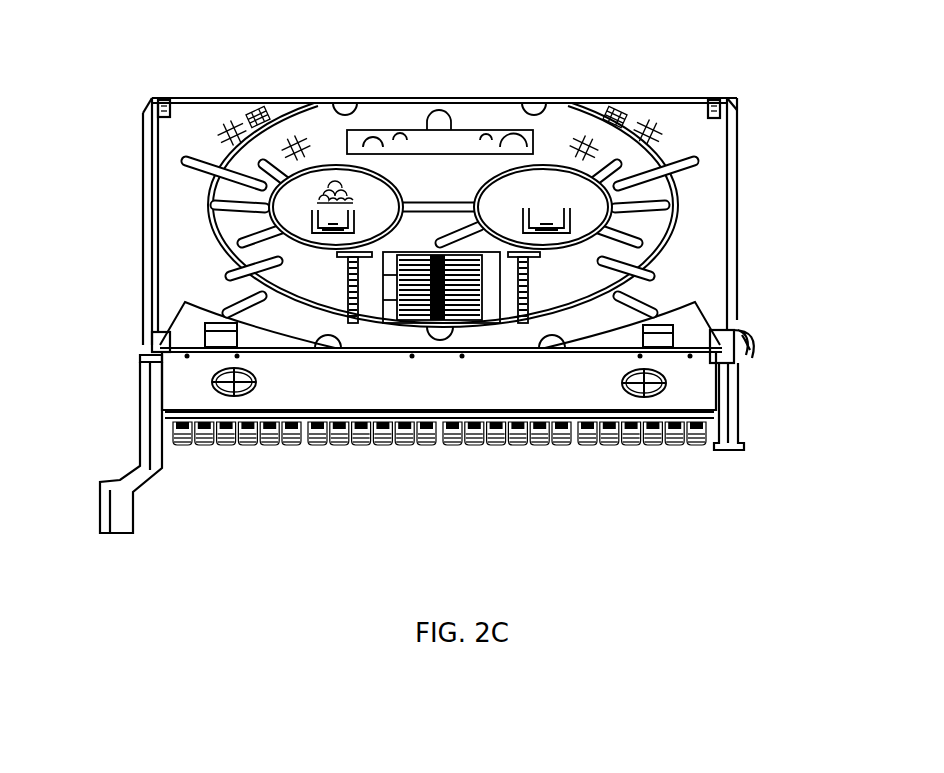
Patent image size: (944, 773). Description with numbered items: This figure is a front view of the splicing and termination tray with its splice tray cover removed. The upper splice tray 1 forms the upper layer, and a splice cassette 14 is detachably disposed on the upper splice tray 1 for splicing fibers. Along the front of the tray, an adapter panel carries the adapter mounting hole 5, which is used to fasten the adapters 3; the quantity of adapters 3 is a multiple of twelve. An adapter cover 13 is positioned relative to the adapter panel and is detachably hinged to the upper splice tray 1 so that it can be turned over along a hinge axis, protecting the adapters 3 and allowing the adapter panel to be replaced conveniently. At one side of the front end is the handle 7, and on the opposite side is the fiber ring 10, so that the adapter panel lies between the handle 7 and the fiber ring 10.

The upper splice tray 1 is at (685, 148).
The splice cassette 14 is at (478, 215).
The adapter cover 13 is at (522, 378).
The adapters 3 is at (373, 443).
The adapter mounting hole 5 is at (478, 442).
The fiber ring 10 is at (143, 396).
The handle 7 is at (742, 397).